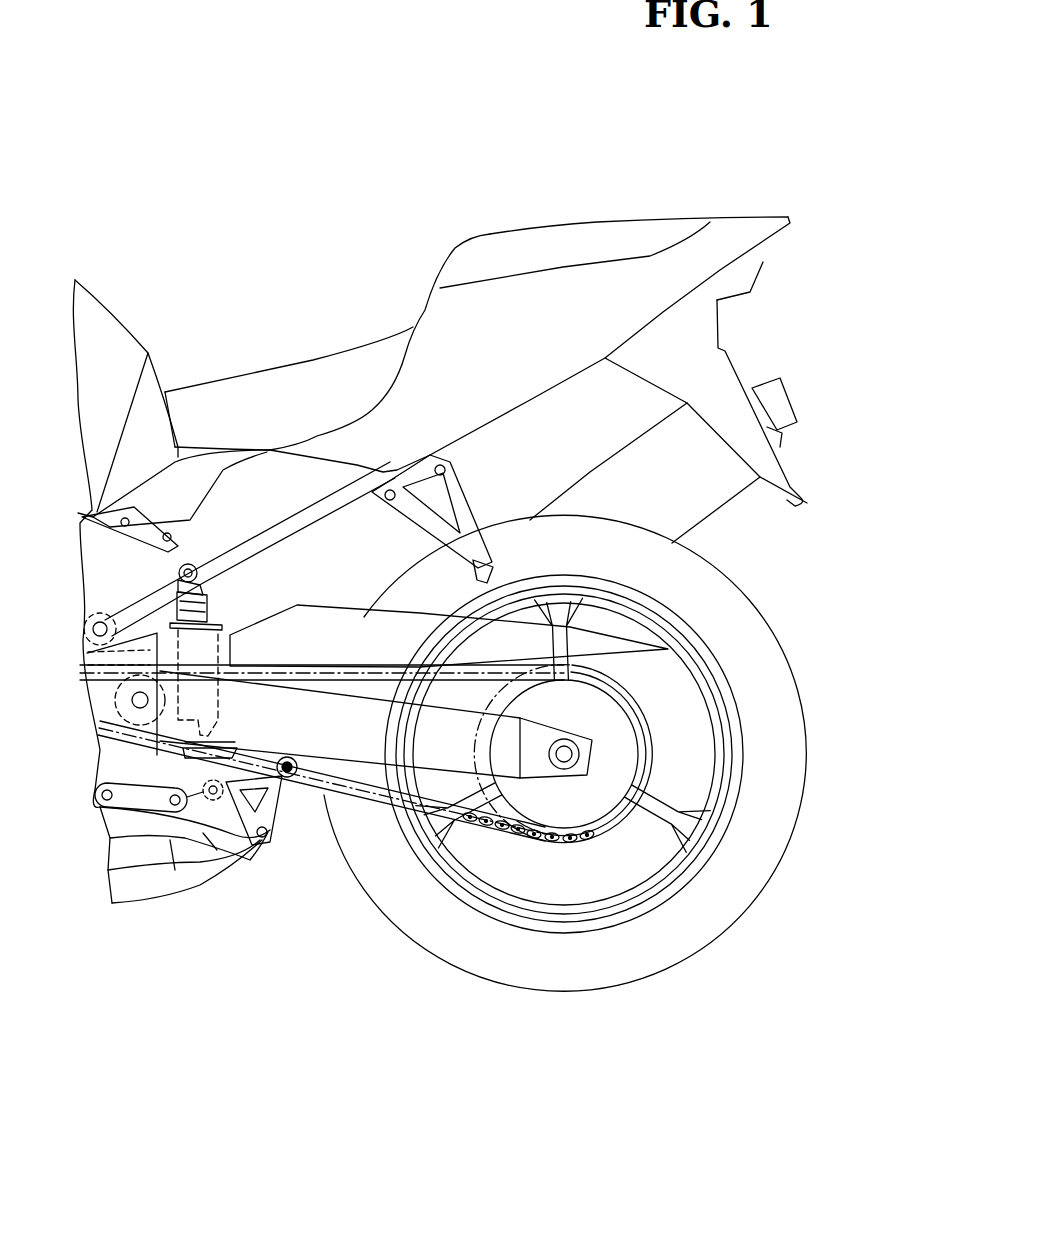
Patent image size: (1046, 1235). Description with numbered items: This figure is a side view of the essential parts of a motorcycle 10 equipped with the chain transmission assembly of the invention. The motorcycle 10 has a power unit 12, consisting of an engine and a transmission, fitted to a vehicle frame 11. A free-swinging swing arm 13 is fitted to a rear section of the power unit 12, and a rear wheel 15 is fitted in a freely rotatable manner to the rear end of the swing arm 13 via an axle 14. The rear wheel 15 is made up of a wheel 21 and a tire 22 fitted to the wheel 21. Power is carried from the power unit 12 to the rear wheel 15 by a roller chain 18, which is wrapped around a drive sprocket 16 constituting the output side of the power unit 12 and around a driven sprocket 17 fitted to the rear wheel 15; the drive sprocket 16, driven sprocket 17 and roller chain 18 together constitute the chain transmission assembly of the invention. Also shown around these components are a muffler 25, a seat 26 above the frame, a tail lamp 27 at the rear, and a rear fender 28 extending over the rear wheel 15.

The motorcycle 10 is at (240, 192).
The vehicle frame 11 is at (148, 353).
The power unit 12 is at (142, 772).
The swing arm 13 is at (372, 757).
The axle 14 is at (590, 753).
The rear wheel 15 is at (615, 764).
The drive sprocket 16 is at (103, 787).
The driven sprocket 17 is at (468, 822).
The roller chain 18 is at (537, 800).
The wheel 21 is at (730, 830).
The tire 22 is at (710, 947).
The muffler 25 is at (790, 397).
The seat 26 is at (305, 362).
The tail lamp 27 is at (770, 258).
The rear fender 28 is at (793, 470).